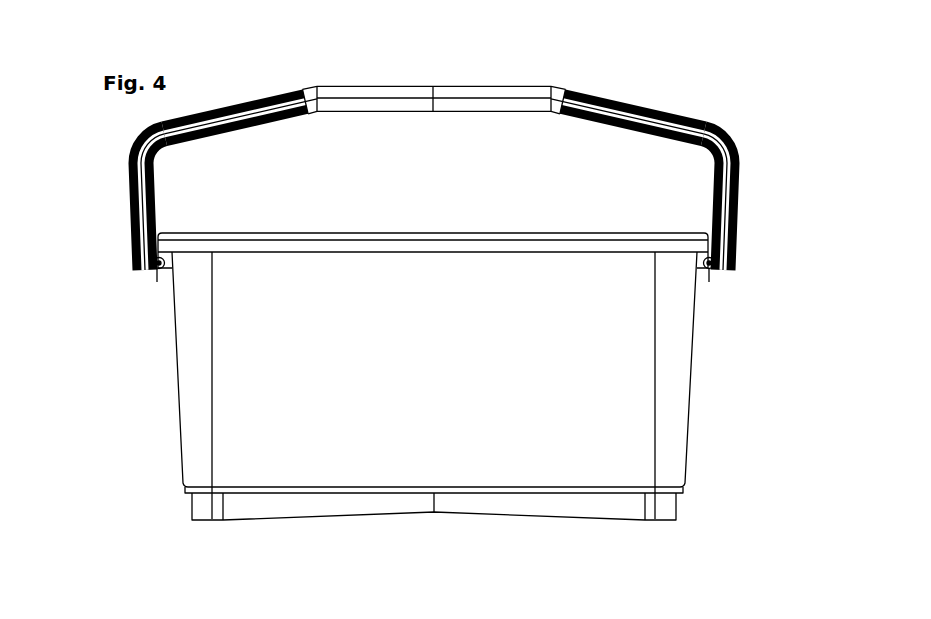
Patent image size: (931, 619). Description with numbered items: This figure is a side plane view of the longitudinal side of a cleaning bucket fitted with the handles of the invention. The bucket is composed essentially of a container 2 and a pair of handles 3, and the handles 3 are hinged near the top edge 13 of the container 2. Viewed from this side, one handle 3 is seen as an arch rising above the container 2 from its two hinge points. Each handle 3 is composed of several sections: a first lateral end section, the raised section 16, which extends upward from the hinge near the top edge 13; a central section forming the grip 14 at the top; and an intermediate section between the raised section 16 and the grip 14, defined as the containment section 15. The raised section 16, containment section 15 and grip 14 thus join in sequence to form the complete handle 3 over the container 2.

The container 2 is at (677, 377).
The handles 3 is at (434, 142).
The top edge 13 is at (700, 222).
The grip 14 is at (390, 84).
The containment section 15 is at (243, 100).
The raised section 16 is at (123, 192).